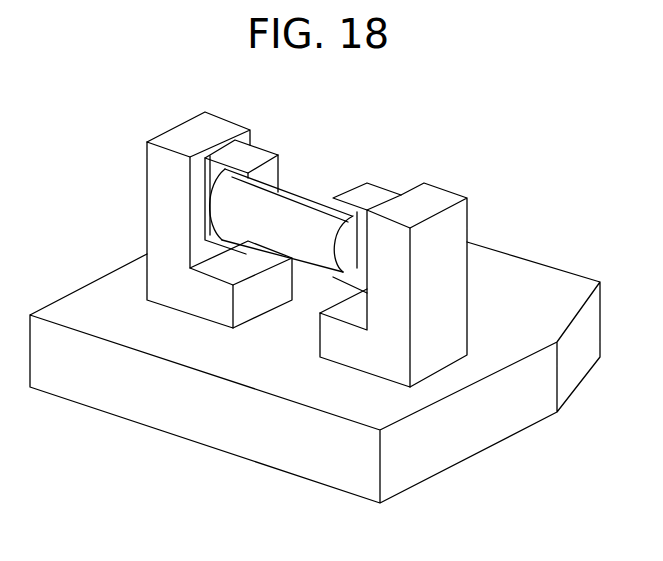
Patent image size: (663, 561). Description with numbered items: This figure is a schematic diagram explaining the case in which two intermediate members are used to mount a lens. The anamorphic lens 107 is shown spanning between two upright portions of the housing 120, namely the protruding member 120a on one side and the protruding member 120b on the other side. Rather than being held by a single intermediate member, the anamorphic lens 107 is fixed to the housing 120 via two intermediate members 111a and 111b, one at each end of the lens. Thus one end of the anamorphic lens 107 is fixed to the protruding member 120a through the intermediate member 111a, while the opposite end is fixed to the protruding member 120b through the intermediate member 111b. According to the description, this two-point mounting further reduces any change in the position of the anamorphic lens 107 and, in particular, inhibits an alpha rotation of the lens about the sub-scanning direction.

The anamorphic lens 107 is at (313, 173).
The intermediate member 111a is at (278, 128).
The intermediate member 111b is at (397, 170).
The housing 120 is at (555, 268).
The protruding member 120a is at (144, 216).
The protruding member 120b is at (474, 211).